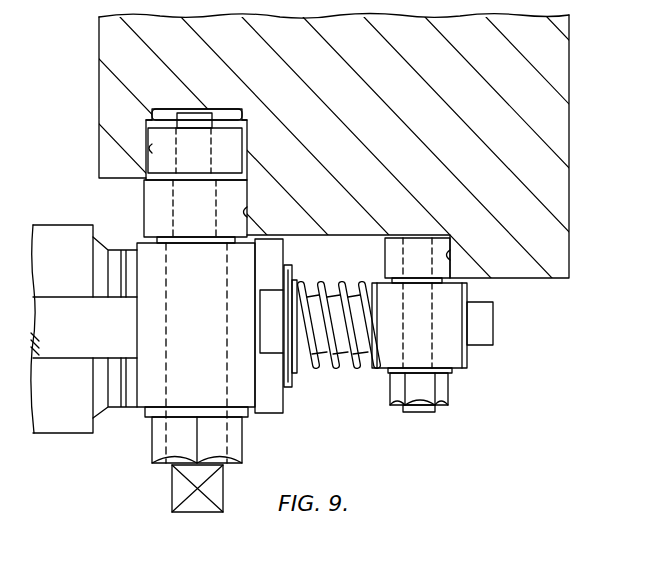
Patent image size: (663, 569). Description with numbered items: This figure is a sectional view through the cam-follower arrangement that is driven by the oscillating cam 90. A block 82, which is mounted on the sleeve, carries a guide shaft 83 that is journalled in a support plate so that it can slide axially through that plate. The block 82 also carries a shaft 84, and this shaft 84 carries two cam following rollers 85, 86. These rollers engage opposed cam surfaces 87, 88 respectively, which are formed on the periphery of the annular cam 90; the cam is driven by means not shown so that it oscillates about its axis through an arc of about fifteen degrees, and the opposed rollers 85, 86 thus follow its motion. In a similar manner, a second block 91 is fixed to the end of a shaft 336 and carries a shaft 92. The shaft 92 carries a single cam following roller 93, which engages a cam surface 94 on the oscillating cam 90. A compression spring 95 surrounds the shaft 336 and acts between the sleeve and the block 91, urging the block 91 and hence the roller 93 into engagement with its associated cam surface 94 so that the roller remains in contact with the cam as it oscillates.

The block 82 is at (241, 393).
The guide shaft 83 is at (78, 343).
The shaft 84 is at (167, 378).
The cam following roller 85 is at (233, 150).
The cam following roller 86 is at (148, 201).
The cam surface 87 is at (150, 148).
The cam surface 88 is at (247, 212).
The oscillating cam 90 is at (548, 183).
The block 91 is at (453, 360).
The shaft 92 is at (432, 342).
The cam following roller 93 is at (385, 255).
The cam surface 94 is at (450, 253).
The compression spring 95 is at (312, 363).
The shaft 336 is at (313, 297).